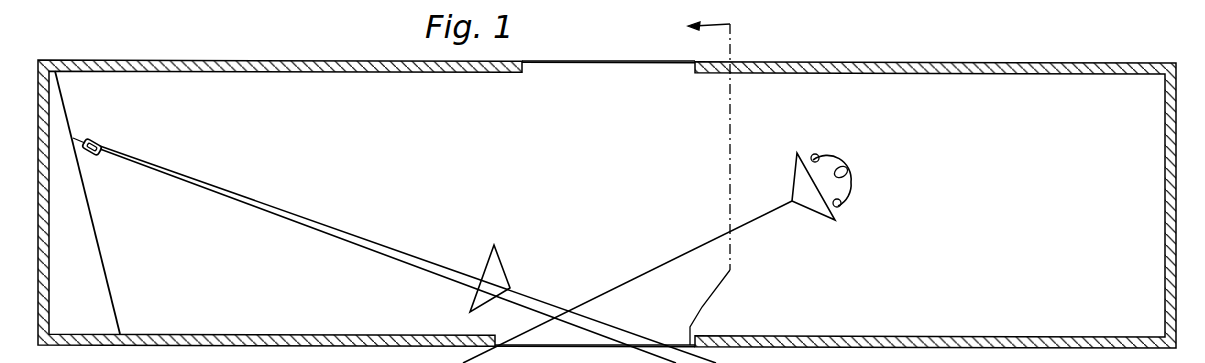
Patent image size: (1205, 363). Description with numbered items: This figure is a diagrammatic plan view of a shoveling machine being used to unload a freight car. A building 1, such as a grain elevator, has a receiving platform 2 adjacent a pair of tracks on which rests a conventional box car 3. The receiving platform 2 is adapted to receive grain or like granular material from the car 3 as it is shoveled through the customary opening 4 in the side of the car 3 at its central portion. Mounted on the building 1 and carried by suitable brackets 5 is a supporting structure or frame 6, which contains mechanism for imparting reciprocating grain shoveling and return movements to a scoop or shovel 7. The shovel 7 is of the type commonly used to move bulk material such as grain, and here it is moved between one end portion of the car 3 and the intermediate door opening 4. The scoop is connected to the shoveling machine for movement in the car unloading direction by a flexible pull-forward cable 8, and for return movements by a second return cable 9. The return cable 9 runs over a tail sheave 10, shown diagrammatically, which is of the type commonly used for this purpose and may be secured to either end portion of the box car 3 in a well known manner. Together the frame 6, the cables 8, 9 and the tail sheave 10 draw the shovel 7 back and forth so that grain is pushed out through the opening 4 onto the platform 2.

The building 1 is at (488, 255).
The receiving platform 2 is at (709, 174).
The box car 3 is at (991, 70).
The opening 4 is at (628, 71).
The brackets 5 is at (583, 338).
The supporting structure 6 is at (410, 350).
The shovel 7 is at (797, 177).
The pull-forward cable 8 is at (552, 302).
The return cable 9 is at (386, 244).
The tail sheave 10 is at (97, 140).